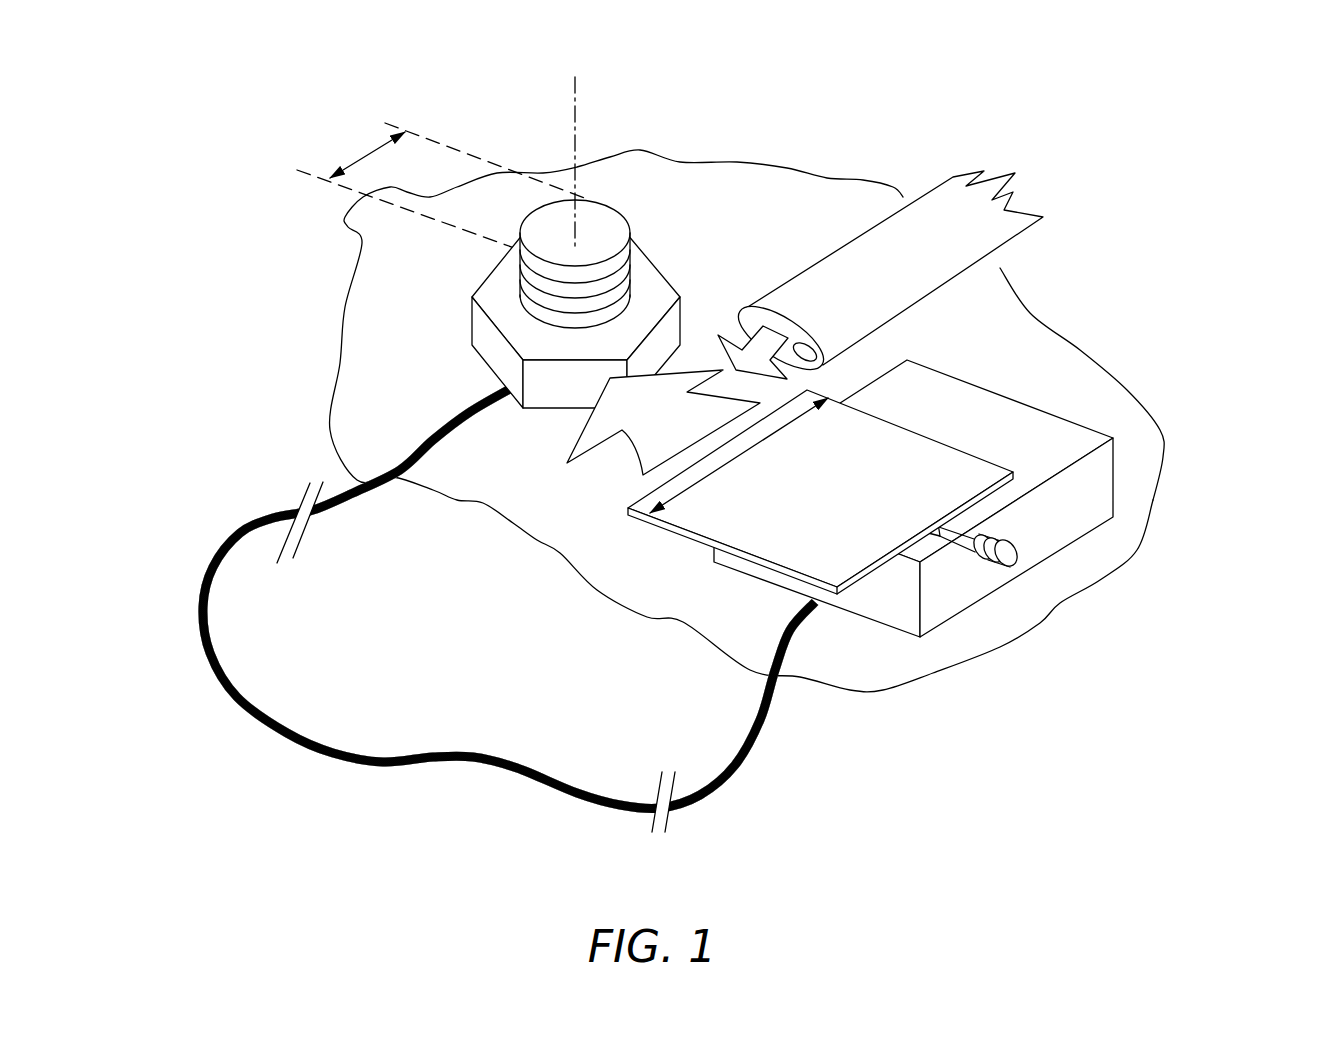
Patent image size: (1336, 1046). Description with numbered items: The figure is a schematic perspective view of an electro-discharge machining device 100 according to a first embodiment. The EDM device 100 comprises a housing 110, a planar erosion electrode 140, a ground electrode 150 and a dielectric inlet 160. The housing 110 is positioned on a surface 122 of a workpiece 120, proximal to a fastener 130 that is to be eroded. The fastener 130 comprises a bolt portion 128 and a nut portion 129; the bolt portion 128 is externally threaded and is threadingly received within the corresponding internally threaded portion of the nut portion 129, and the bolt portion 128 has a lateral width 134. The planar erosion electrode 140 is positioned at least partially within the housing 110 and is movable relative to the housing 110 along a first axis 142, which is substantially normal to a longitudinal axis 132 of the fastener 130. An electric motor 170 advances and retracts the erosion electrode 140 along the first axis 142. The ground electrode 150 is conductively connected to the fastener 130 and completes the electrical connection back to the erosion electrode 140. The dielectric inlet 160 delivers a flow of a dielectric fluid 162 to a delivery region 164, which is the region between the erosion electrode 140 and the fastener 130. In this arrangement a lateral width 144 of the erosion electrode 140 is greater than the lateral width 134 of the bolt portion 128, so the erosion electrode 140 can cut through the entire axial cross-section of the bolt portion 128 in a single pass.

The electro-discharge machining device 100 is at (1153, 310).
The housing 110 is at (1060, 415).
The workpiece 120 is at (1148, 448).
The surface 122 is at (1142, 500).
The bolt portion 128 is at (627, 224).
The nut portion 129 is at (692, 360).
The fastener 130 is at (546, 224).
The longitudinal axis 132 is at (577, 102).
The lateral width 134 is at (443, 186).
The planar erosion electrode 140 is at (650, 516).
The first axis 142 is at (566, 457).
The lateral width 144 is at (697, 487).
The ground electrode 150 is at (247, 527).
The dielectric inlet 160 is at (919, 245).
The dielectric fluid 162 is at (815, 268).
The delivery region 164 is at (720, 334).
The electric motor 170 is at (992, 567).